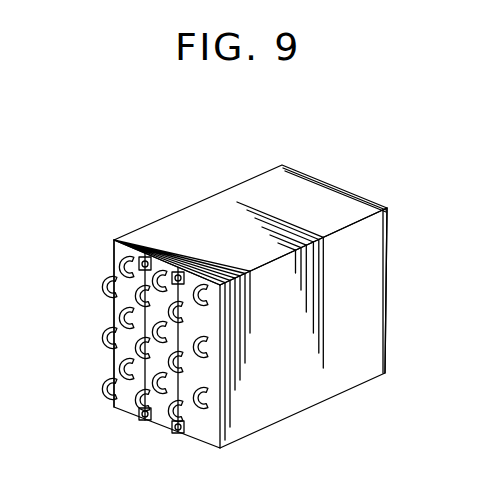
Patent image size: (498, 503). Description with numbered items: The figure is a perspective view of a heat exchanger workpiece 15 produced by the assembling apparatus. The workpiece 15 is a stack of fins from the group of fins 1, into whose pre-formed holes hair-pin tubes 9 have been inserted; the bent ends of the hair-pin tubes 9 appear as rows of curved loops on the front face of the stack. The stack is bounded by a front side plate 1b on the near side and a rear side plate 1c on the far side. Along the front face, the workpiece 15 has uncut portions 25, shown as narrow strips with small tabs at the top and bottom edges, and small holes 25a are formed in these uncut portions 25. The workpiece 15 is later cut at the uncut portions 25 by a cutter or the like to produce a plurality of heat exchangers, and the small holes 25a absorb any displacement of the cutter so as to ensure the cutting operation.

The group of fins 1 is at (323, 368).
The front side plate 1b is at (113, 263).
The rear side plate 1c is at (385, 287).
The hair-pin tubes 9 is at (108, 338).
The workpiece 15 is at (264, 186).
The uncut portions 25 is at (179, 272).
The small holes 25a is at (147, 257).